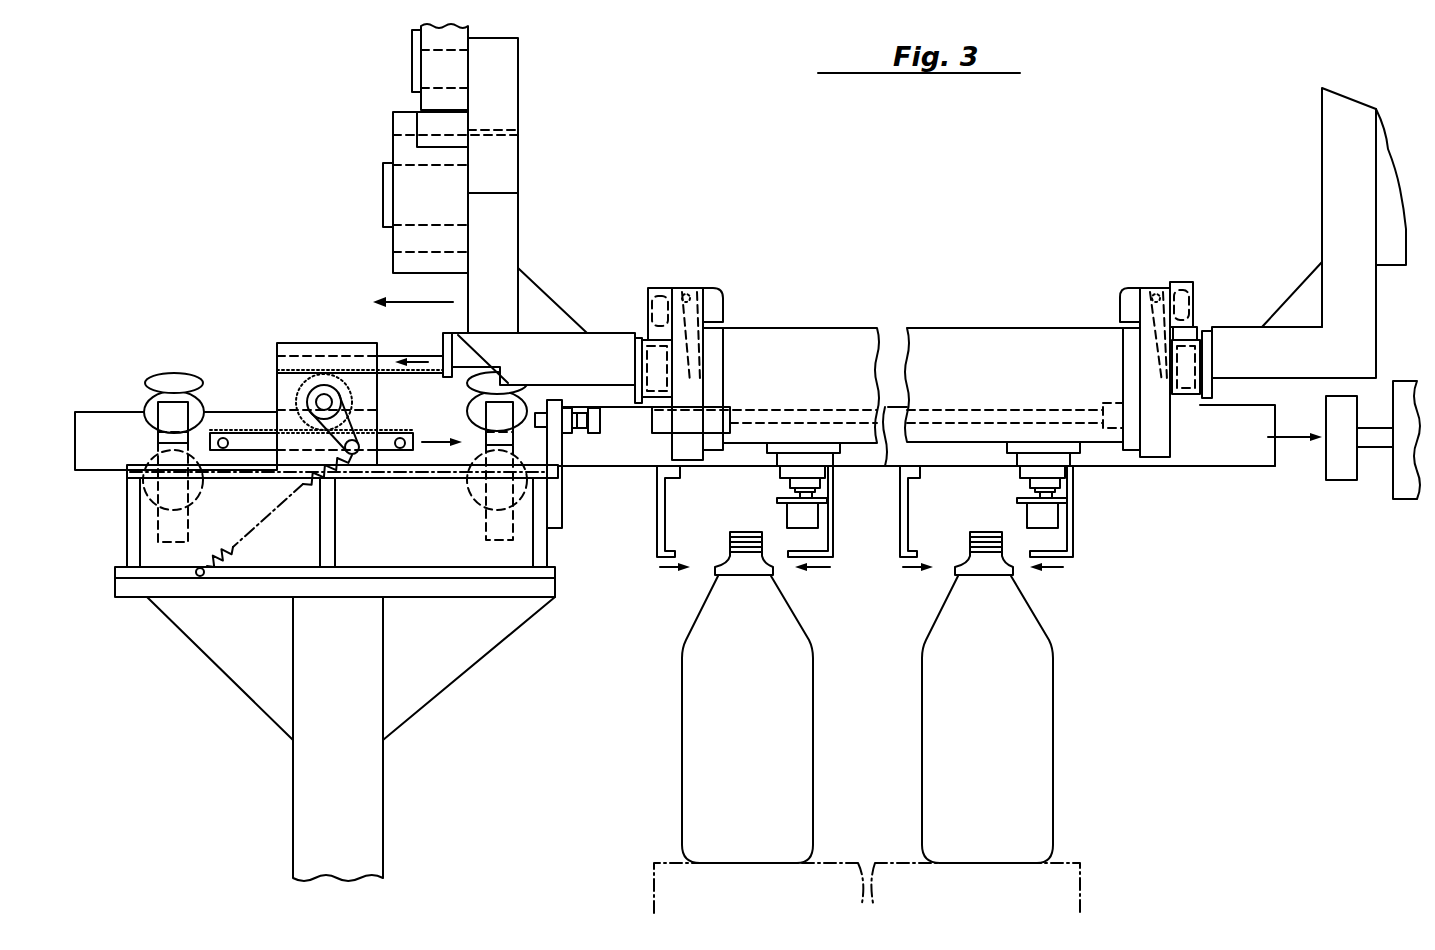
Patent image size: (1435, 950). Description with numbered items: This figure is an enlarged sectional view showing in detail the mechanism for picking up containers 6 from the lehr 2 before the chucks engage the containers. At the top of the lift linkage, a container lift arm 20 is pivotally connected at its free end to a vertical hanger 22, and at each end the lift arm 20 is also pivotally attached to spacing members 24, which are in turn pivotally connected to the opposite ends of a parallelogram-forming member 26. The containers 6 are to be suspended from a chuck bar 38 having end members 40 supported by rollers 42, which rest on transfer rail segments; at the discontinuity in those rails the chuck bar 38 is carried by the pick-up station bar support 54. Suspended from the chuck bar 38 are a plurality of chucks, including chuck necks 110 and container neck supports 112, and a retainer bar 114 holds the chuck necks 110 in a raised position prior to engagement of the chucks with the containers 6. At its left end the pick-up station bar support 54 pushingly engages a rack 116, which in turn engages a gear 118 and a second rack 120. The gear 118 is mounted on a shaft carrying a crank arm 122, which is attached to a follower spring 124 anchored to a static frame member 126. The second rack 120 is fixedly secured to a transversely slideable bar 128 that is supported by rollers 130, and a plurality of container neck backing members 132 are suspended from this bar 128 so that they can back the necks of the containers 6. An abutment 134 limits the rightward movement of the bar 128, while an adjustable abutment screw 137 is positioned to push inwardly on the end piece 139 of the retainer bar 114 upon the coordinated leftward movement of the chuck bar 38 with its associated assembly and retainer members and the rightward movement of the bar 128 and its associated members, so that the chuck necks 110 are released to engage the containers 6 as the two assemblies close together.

The lehr 2 is at (673, 873).
The containers 6 is at (925, 682).
The container lift arm 20 is at (427, 121).
The vertical hanger 22 is at (505, 243).
The spacing members 24 is at (505, 94).
The parallelogram-forming member 26 is at (435, 36).
The chuck bar 38 is at (805, 335).
The end members 40 is at (713, 296).
The rollers 42 is at (658, 290).
The pick-up station bar support 54 is at (592, 333).
The chuck necks 110 is at (792, 518).
The container neck supports 112 is at (833, 532).
The retainer bar 114 is at (803, 412).
The rack 116 is at (273, 358).
The gear 118 is at (302, 372).
The second rack 120 is at (242, 437).
The crank arm 122 is at (336, 393).
The follower spring 124 is at (228, 568).
The static frame member 126 is at (203, 625).
The transversely slideable bar 128 is at (103, 422).
The rollers 130 is at (175, 380).
The container neck backing members 132 is at (657, 540).
The abutment 134 is at (1338, 464).
The adjustable abutment screw 137 is at (597, 433).
The end piece 139 is at (663, 420).